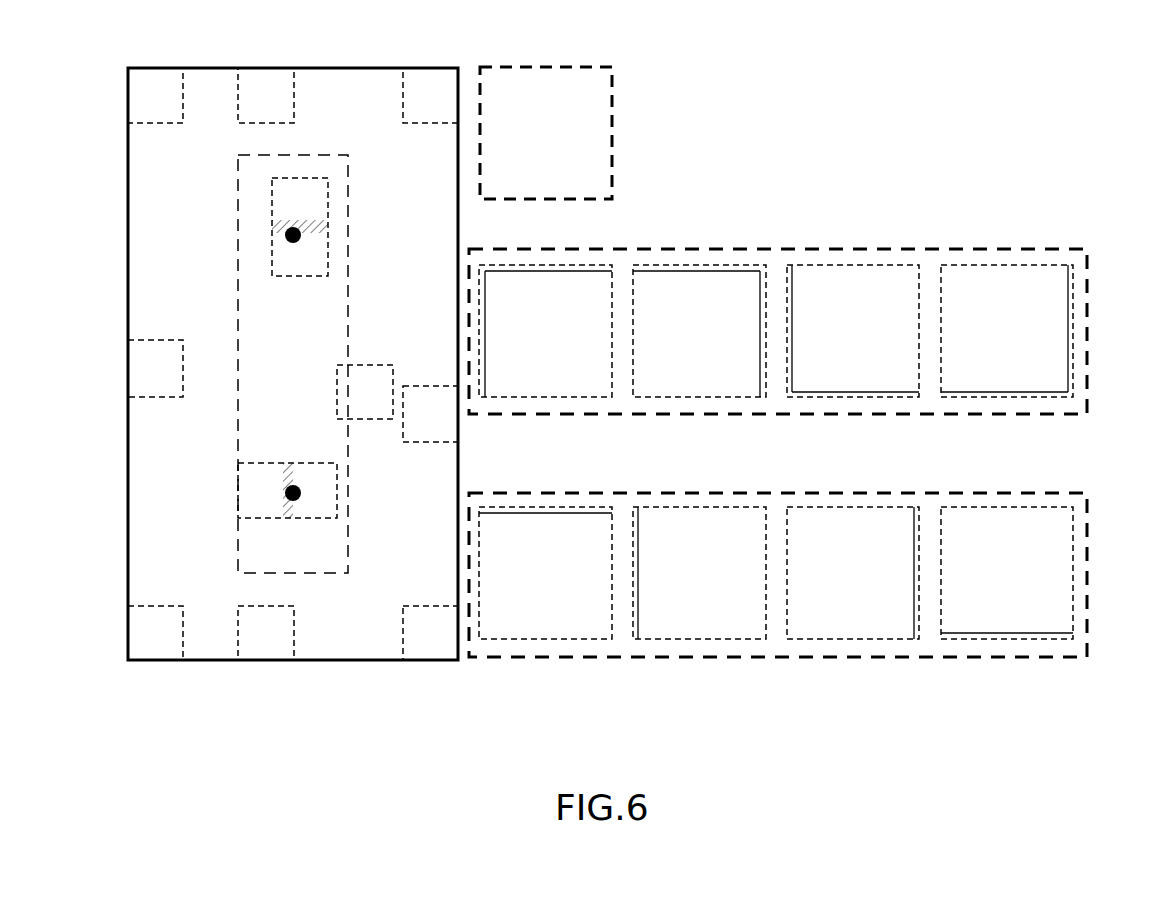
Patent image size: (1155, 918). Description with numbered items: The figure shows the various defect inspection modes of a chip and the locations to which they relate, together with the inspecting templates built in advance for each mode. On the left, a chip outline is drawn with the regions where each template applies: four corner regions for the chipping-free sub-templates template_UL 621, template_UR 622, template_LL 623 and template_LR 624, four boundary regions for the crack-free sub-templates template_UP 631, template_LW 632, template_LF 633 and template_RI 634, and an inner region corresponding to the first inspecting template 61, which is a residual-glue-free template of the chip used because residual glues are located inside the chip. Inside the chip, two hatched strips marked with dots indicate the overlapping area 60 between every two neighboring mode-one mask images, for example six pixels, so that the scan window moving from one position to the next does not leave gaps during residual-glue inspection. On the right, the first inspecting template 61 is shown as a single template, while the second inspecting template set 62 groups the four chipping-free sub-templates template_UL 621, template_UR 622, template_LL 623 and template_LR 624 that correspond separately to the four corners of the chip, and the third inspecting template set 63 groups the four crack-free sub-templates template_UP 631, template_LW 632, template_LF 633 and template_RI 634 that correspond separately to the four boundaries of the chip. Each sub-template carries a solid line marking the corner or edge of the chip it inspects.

The overlapping area 60 is at (272, 226).
The first inspecting template 61 is at (338, 393).
The second inspecting template set 62 is at (943, 249).
The third inspecting template set 63 is at (1072, 493).
The template_UL 621 is at (154, 67).
The template_UR 622 is at (429, 67).
The template_LL 623 is at (155, 662).
The template_LR 624 is at (428, 662).
The template_UP 631 is at (266, 67).
The template_LW 632 is at (265, 662).
The template_LF 633 is at (128, 368).
The template_RI 634 is at (432, 386).